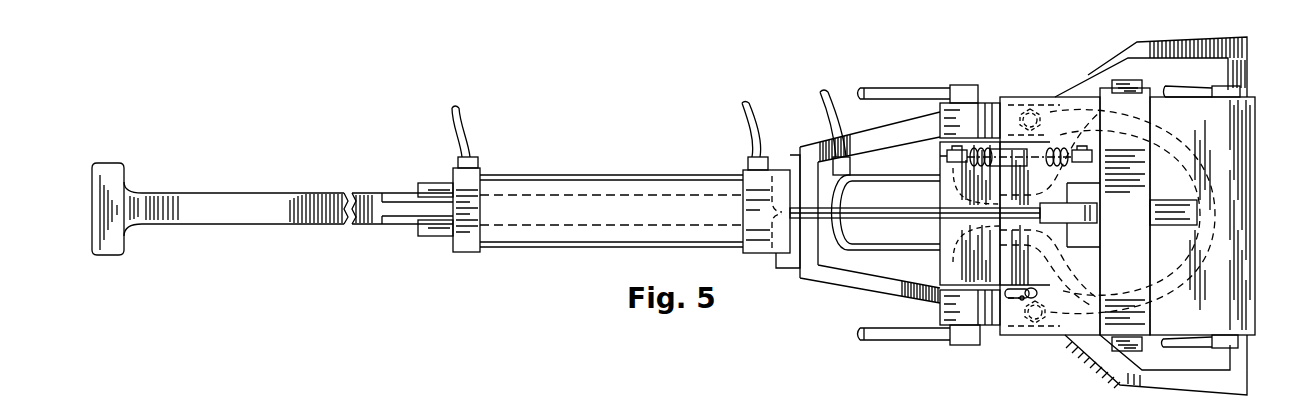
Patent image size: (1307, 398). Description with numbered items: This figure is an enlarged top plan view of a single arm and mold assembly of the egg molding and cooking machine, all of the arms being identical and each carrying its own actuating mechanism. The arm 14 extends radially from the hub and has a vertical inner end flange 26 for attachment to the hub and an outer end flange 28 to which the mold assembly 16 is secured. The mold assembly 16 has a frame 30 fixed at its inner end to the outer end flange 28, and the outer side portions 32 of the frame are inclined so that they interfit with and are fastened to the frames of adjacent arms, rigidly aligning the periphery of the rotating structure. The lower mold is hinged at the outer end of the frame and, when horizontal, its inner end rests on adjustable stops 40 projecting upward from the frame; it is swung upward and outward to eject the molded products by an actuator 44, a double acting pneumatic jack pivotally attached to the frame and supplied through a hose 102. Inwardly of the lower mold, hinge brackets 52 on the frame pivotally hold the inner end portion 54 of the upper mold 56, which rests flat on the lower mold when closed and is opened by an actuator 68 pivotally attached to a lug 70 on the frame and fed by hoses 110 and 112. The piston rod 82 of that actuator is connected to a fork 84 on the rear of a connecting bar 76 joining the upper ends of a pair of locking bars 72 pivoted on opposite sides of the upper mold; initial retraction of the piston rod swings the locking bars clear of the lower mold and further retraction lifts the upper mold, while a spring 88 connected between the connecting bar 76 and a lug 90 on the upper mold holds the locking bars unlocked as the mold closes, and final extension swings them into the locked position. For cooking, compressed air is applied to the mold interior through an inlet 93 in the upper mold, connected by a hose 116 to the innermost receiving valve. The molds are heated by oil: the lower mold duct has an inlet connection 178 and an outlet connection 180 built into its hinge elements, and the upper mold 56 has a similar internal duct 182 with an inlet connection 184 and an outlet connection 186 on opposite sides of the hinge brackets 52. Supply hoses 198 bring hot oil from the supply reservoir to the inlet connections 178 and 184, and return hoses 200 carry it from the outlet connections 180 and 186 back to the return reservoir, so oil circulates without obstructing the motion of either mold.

The arm 14 is at (298, 212).
The mold assembly 16 is at (1095, 68).
The inner end flange 26 is at (100, 248).
The outer end flange 28 is at (797, 258).
The frame 30 is at (862, 283).
The outer side portions 32 is at (1203, 42).
The adjustable stops 40 is at (1032, 108).
The actuator 44 is at (870, 238).
The hinge brackets 52 is at (940, 108).
The inner end portion 54 is at (947, 184).
The upper mold 56 is at (1242, 148).
The actuator 68 is at (560, 233).
The lug 70 is at (402, 220).
The locking bars 72 is at (1120, 80).
The connecting bar 76 is at (1142, 172).
The piston rod 82 is at (950, 212).
The fork 84 is at (1090, 240).
The spring 88 is at (1053, 152).
The lug 90 is at (947, 155).
The inlet 93 is at (1028, 288).
The hose 102 is at (822, 93).
The hose 110 is at (470, 112).
The hose 112 is at (740, 112).
The hose 116 is at (1020, 300).
The inlet connection 178 is at (1240, 343).
The outlet connection 180 is at (1238, 90).
The internal duct 182 is at (1212, 278).
The inlet connection 184 is at (960, 335).
The outlet connection 186 is at (960, 85).
The supply hoses 198 is at (878, 335).
The return hoses 200 is at (870, 88).